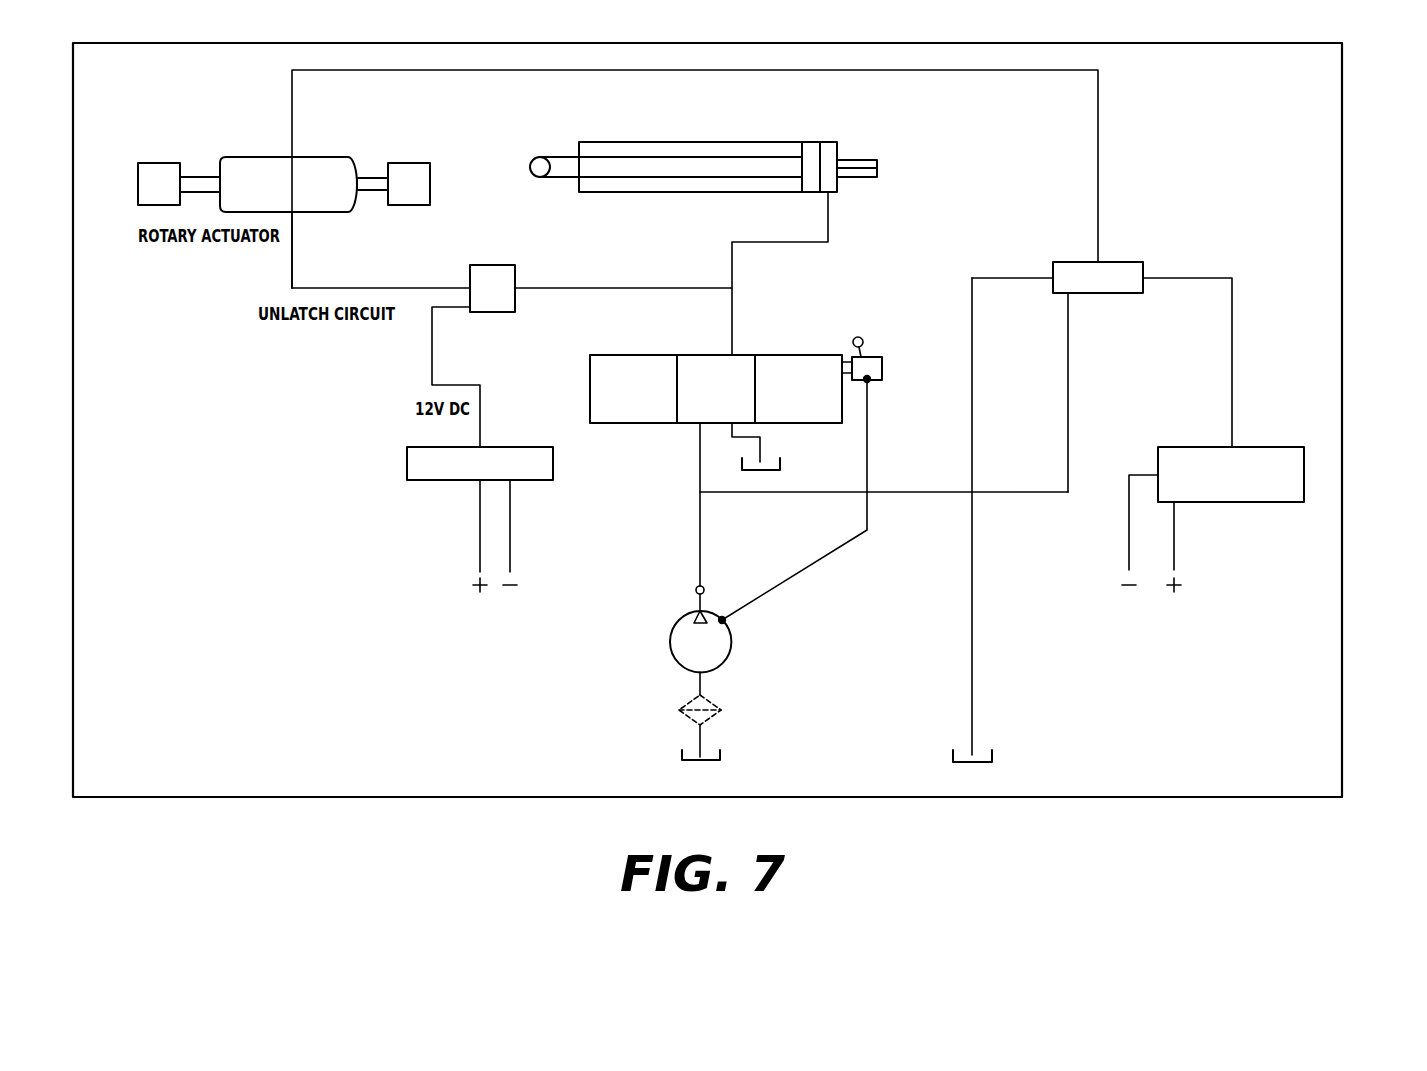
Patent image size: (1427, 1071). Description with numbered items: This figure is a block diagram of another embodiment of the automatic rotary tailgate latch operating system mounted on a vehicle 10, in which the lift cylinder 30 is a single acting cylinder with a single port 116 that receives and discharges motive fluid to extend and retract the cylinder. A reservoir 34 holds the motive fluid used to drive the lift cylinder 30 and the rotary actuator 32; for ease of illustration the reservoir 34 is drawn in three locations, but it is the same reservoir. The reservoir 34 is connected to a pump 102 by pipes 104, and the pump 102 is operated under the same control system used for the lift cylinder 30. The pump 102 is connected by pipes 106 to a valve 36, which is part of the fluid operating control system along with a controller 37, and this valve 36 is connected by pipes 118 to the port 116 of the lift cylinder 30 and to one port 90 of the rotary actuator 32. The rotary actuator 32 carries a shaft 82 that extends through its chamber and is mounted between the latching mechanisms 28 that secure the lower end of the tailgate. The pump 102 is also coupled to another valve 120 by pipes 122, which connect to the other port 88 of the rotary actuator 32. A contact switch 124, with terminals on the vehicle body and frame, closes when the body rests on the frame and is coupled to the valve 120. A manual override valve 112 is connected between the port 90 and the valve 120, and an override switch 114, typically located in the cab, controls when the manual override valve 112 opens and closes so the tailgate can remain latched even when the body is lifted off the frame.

The vehicle 10 is at (1342, 552).
The latching mechanism 28 is at (155, 165).
The shaft 82 is at (205, 182).
The rotary actuator 32 is at (273, 178).
The port 88 is at (292, 157).
The port 90 is at (292, 213).
The lift cylinder 30 is at (788, 145).
The port 116 is at (828, 193).
The pipes 118 is at (732, 253).
The manual override valve 112 is at (492, 277).
The override switch 114 is at (408, 462).
The valve 36 is at (663, 424).
The controller 37 is at (868, 353).
The pipes 122 is at (928, 492).
The pipes 106 is at (702, 530).
The pump 102 is at (717, 647).
The pipes 104 is at (702, 733).
The reservoir 34 is at (778, 463).
The valve 120 is at (1132, 268).
The contact switch 124 is at (1265, 447).